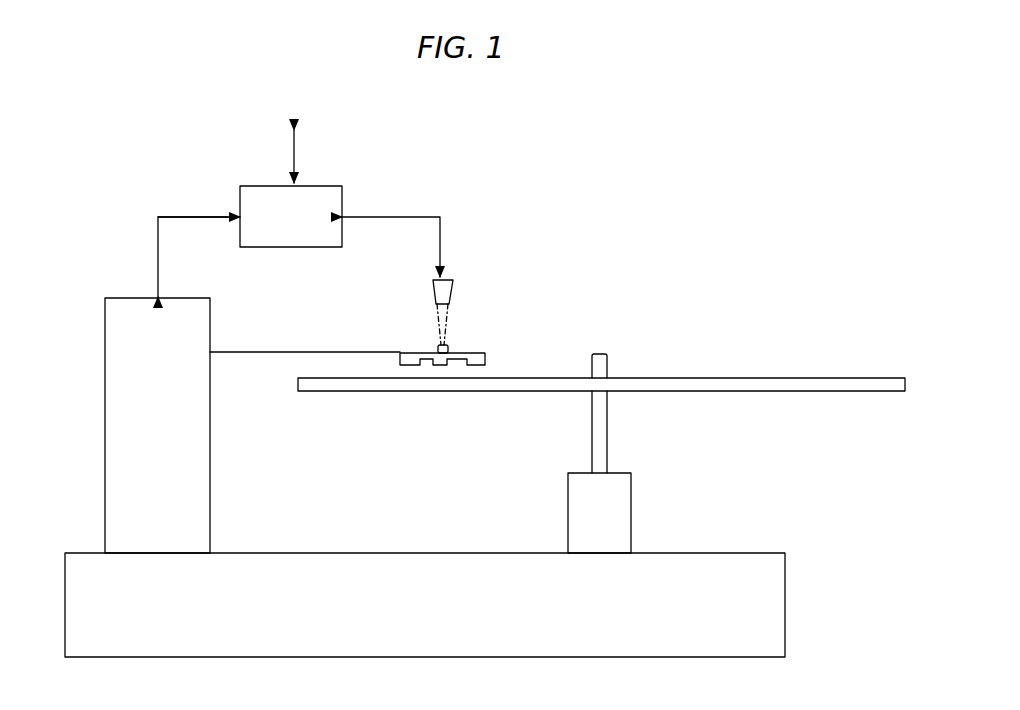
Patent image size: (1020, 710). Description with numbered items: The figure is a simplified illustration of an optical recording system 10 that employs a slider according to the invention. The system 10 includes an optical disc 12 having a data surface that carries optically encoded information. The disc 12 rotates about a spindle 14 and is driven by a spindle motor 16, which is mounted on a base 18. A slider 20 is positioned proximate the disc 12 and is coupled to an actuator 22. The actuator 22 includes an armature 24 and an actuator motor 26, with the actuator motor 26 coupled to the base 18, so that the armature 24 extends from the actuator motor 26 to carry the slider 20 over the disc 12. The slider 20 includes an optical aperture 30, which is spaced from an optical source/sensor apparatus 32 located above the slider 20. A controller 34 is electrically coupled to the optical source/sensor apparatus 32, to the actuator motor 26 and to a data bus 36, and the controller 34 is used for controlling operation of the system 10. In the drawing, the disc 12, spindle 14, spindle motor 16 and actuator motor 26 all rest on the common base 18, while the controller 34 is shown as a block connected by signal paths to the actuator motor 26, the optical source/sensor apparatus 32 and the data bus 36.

The optical recording system 10 is at (680, 322).
The optical disc 12 is at (798, 378).
The spindle 14 is at (604, 434).
The spindle motor 16 is at (631, 513).
The base 18 is at (470, 626).
The slider 20 is at (495, 348).
The actuator 22 is at (238, 384).
The armature 24 is at (278, 352).
The actuator motor 26 is at (158, 406).
The optical aperture 30 is at (450, 347).
The optical source/sensor apparatus 32 is at (447, 290).
The controller 34 is at (303, 238).
The data bus 36 is at (297, 162).